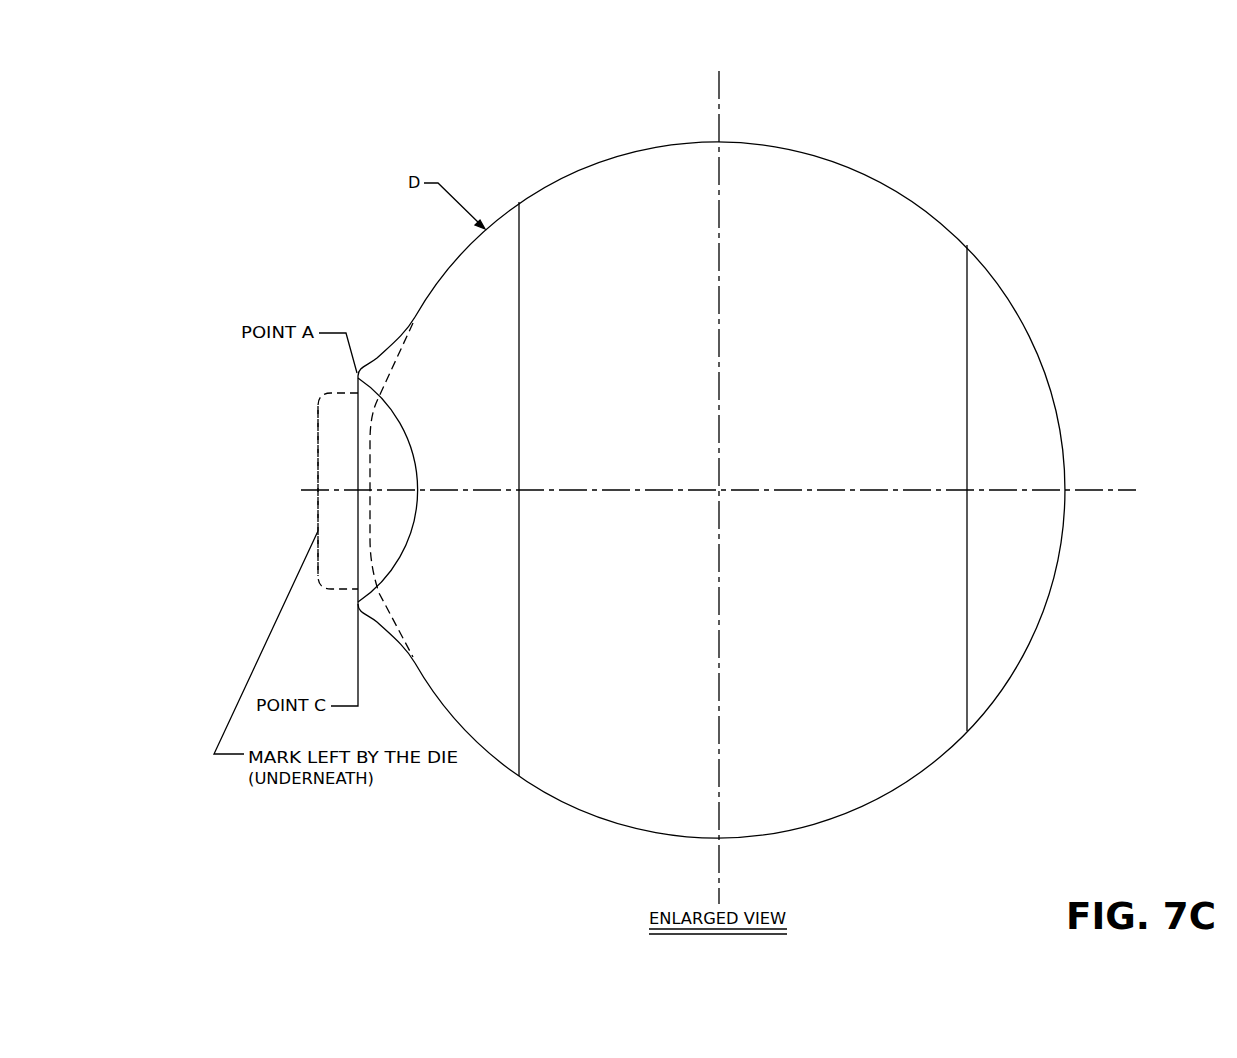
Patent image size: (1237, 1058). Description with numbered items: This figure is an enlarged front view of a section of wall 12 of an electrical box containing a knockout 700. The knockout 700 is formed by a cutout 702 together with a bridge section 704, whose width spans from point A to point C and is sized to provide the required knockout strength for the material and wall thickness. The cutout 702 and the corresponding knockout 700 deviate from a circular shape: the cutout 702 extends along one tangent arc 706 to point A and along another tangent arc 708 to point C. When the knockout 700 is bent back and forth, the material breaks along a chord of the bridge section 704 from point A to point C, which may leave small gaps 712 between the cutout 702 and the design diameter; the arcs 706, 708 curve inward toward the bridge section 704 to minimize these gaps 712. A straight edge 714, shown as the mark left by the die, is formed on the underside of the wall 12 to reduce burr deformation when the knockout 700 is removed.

The wall 12 is at (231, 165).
The knockout 700 is at (824, 159).
The cutout 702 is at (940, 221).
The bridge section 704 is at (331, 471).
The tangent arc 706 is at (380, 356).
The tangent arc 708 is at (383, 621).
The gaps 712 is at (378, 378).
The straight edge 714 is at (317, 500).